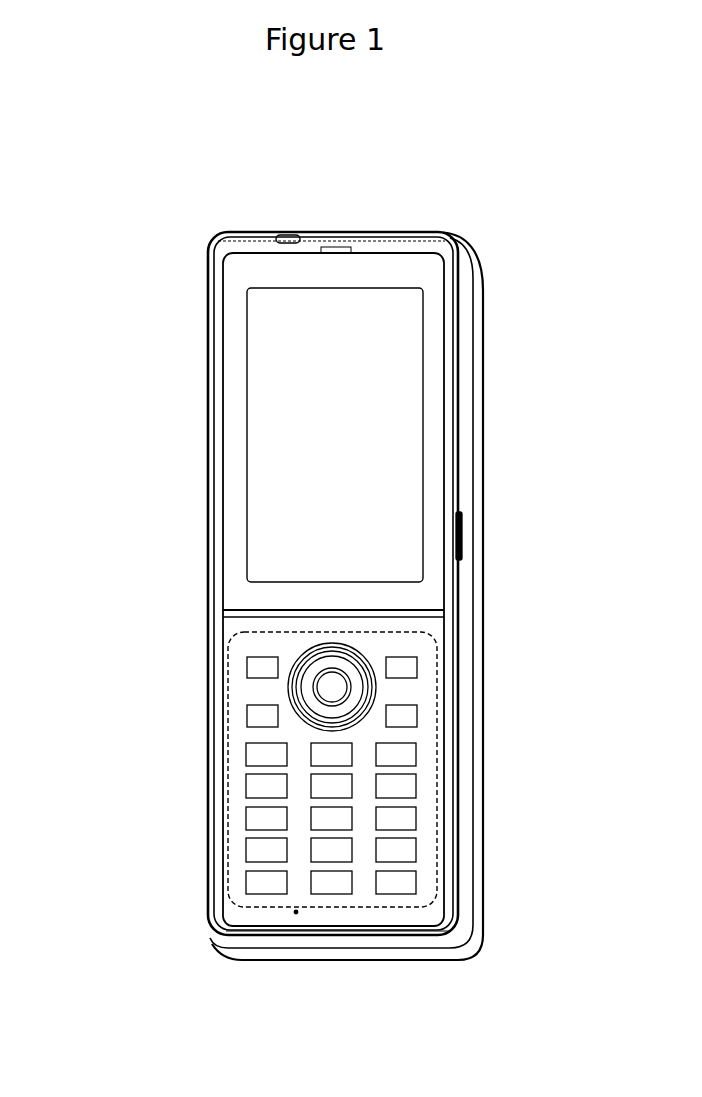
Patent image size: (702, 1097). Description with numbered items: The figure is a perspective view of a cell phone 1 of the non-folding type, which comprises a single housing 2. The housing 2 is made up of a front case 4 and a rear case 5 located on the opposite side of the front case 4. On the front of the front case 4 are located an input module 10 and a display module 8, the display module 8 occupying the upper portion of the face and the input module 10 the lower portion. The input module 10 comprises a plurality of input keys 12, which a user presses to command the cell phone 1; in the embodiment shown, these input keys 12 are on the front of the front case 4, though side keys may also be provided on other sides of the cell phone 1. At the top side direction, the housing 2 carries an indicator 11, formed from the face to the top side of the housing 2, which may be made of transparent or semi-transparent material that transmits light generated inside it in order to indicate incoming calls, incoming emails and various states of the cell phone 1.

The cell phone 1 is at (122, 223).
The housing 2 is at (195, 362).
The front case 4 is at (467, 272).
The rear case 5 is at (478, 285).
The display module 8 is at (407, 424).
The input module 10 is at (436, 682).
The indicator 11 is at (288, 232).
The input keys 12 is at (258, 713).